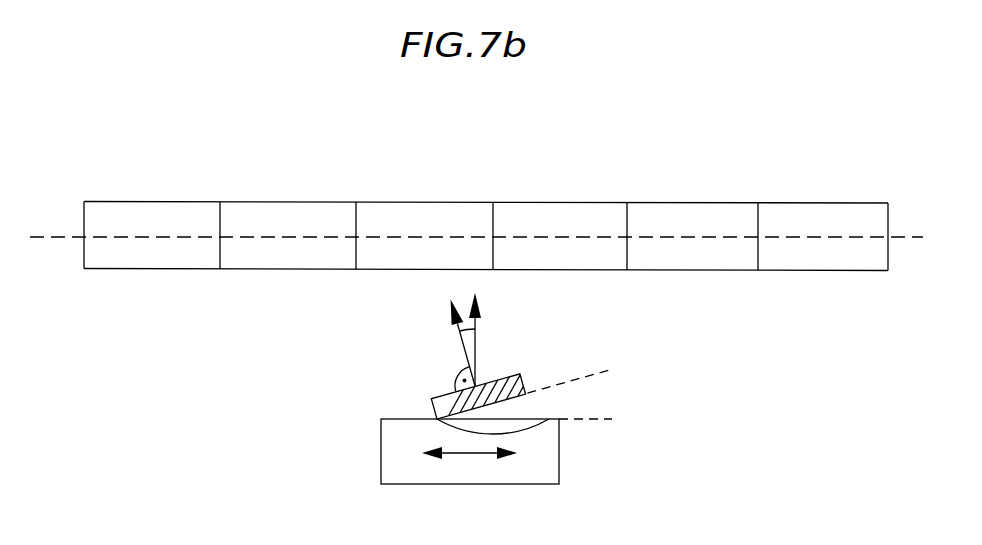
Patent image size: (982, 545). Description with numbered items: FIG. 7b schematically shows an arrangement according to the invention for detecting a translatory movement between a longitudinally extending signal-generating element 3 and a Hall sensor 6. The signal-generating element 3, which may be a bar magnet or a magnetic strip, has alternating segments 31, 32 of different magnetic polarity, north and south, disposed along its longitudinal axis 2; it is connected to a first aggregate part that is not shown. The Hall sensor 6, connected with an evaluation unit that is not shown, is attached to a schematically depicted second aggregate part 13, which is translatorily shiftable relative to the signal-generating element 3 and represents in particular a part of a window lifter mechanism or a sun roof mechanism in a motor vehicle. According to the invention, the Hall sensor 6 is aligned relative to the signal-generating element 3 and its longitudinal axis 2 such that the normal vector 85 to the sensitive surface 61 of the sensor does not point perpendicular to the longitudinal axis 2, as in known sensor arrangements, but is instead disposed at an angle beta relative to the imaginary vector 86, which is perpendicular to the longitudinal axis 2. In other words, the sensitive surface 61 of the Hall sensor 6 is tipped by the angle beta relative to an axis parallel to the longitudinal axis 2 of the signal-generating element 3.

The longitudinal axis 2 is at (52, 236).
The signal-generating element 3 is at (536, 150).
The segment 31 is at (188, 217).
The segment 32 is at (331, 218).
The Hall sensor 6 is at (447, 406).
The sensitive surface 61 is at (424, 382).
The normal vector 85 is at (446, 342).
The vector 86 is at (495, 339).
The second aggregate part 13 is at (395, 466).